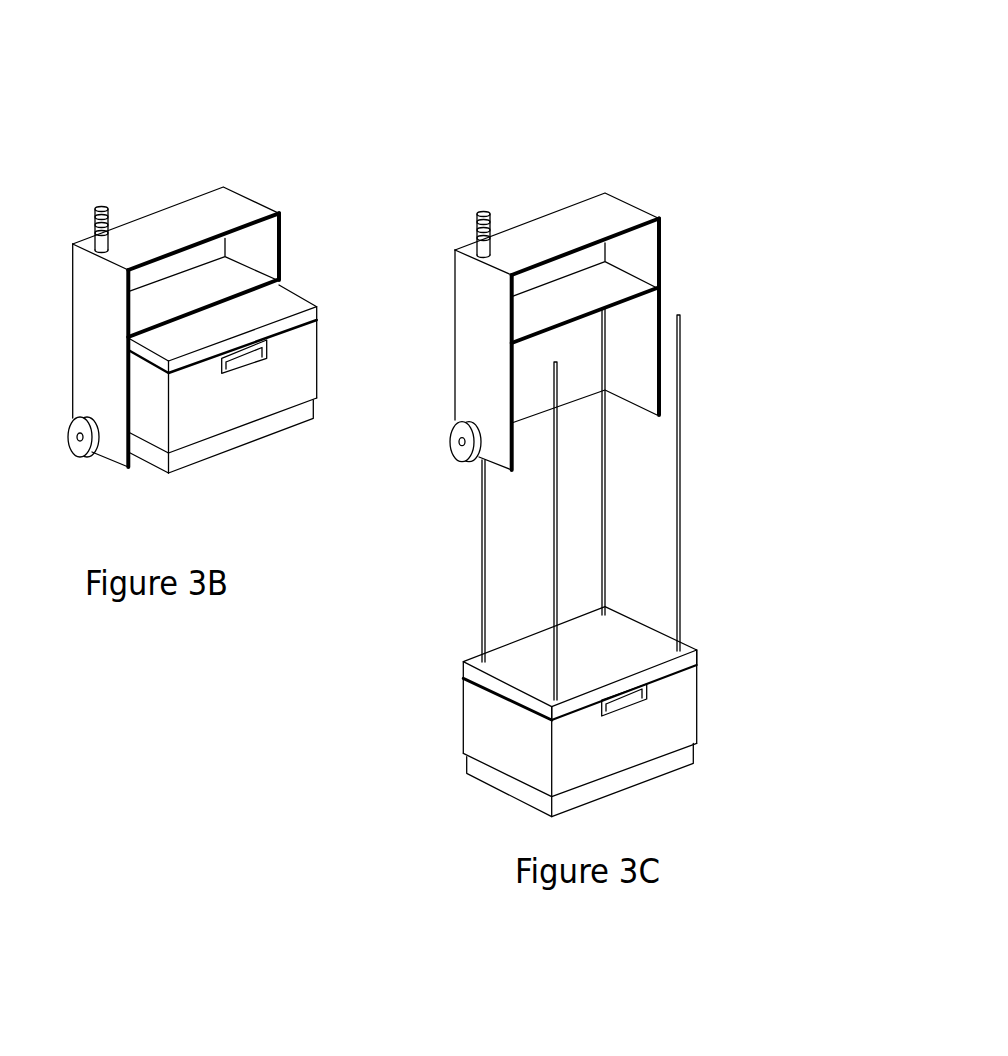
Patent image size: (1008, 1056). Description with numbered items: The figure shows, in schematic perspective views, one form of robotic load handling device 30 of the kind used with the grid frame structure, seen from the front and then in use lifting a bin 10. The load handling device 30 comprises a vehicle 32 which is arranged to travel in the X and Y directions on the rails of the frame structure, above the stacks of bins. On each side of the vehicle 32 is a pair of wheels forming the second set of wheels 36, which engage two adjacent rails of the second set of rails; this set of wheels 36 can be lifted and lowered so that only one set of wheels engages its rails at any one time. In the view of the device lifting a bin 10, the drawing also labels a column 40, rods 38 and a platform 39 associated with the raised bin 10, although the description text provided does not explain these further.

In FIG. 3B, the load handling device 30 is at (257, 144).
In FIG. 3C, the load handling device 30 is at (626, 144).
In FIG. 3C, the vehicle 32 is at (615, 215).
In FIG. 3B, the second set of wheels 36 is at (80, 446).
In FIG. 3C, the second set of wheels 36 is at (457, 450).
In FIG. 3C, the guide rods 38 is at (480, 608).
In FIG. 3C, the platform 39 is at (640, 647).
In FIG. 3C, the column 40 is at (550, 352).
In FIG. 3B, the container 10 is at (212, 400).
In FIG. 3C, the container 10 is at (640, 745).